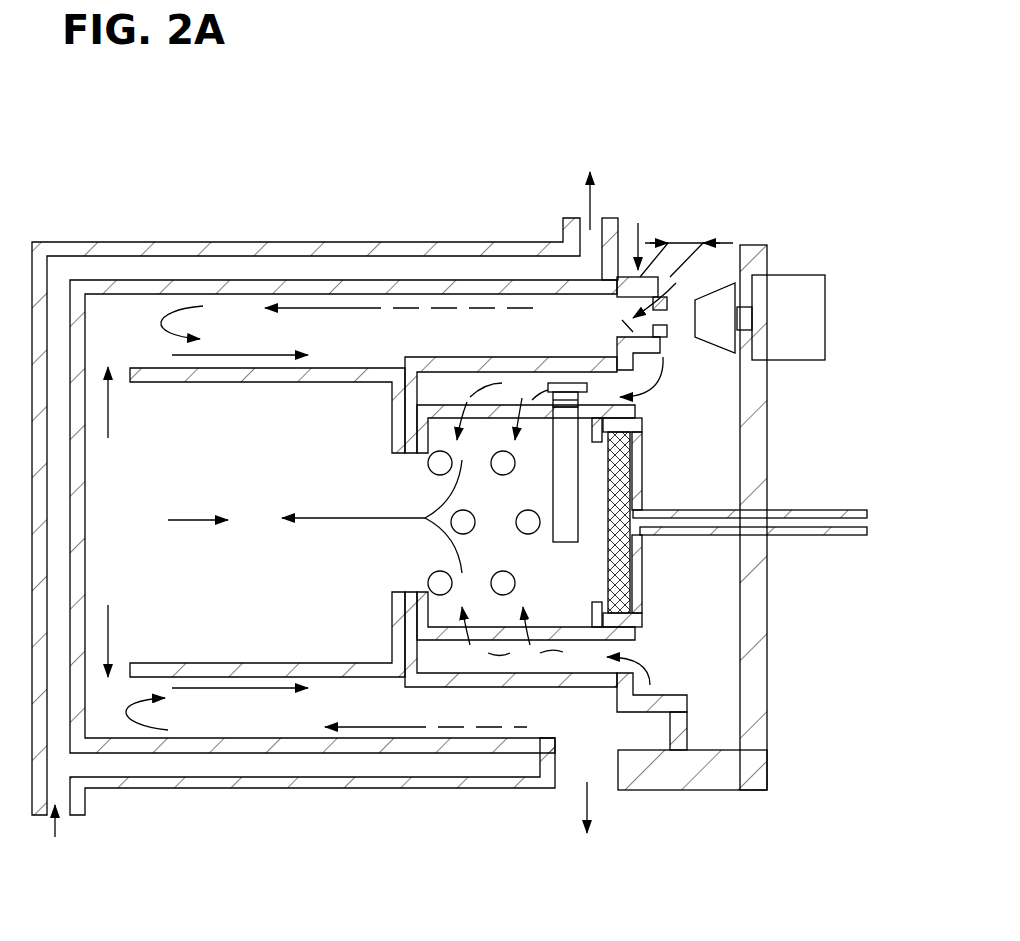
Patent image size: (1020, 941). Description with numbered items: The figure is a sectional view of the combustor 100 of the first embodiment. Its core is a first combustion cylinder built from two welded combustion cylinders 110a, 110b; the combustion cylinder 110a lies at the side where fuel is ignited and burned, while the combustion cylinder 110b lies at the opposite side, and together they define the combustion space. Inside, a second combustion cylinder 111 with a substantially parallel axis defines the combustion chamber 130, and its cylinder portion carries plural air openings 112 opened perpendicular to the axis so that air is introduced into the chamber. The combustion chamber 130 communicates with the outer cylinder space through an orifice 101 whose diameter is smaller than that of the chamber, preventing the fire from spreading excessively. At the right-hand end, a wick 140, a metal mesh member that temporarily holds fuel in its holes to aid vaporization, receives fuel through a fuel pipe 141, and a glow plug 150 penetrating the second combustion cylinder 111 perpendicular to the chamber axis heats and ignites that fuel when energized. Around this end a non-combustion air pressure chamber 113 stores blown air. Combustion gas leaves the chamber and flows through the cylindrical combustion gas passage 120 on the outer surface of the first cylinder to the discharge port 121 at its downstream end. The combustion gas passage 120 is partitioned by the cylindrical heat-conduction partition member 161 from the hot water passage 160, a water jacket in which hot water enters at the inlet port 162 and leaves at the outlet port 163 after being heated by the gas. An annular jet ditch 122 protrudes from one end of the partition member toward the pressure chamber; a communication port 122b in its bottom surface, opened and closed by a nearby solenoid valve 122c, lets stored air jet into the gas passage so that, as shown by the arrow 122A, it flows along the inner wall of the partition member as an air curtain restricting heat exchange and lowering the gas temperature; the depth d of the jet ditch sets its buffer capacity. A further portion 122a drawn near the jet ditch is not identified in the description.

The combustor 100 is at (238, 183).
The orifice 101 is at (410, 552).
The combustion cylinder 110a is at (440, 595).
The combustion cylinder 110b is at (190, 677).
The second combustion cylinder 111 is at (407, 365).
The air openings 112 is at (428, 383).
The non-combustion air pressure chamber 113 is at (712, 598).
The combustion gas passage 120 is at (217, 322).
The discharge port 121 is at (598, 782).
The jet ditch 122 is at (650, 353).
The electrode support 122a is at (660, 753).
The communication port 122b is at (667, 320).
The arrow 122A is at (678, 293).
The solenoid valve 122c is at (792, 275).
The combustion chamber 130 is at (485, 457).
The wick 140 is at (622, 598).
The fuel pipe 141 is at (773, 530).
The glow plug 150 is at (565, 477).
The hot water passage 160 is at (437, 268).
The heat-conduction partition member 161 is at (128, 278).
The inlet port 162 is at (63, 805).
The outlet port 163 is at (580, 218).